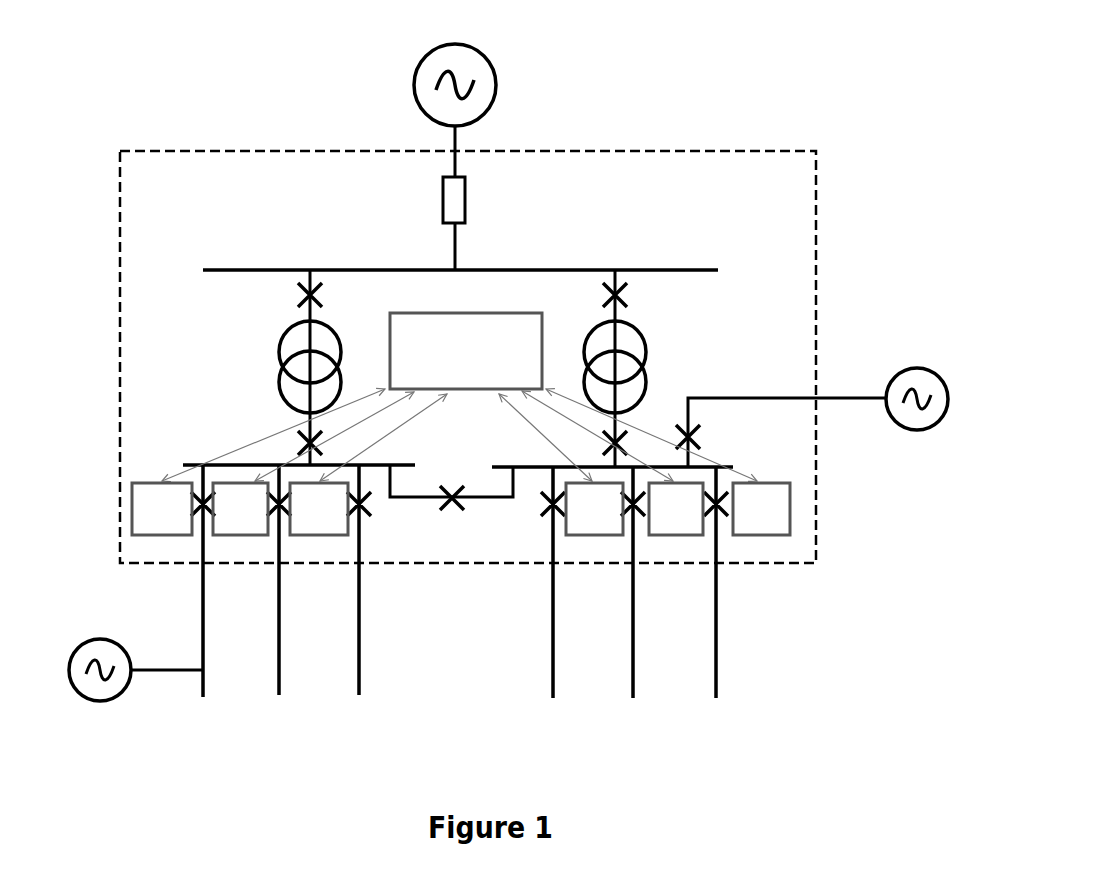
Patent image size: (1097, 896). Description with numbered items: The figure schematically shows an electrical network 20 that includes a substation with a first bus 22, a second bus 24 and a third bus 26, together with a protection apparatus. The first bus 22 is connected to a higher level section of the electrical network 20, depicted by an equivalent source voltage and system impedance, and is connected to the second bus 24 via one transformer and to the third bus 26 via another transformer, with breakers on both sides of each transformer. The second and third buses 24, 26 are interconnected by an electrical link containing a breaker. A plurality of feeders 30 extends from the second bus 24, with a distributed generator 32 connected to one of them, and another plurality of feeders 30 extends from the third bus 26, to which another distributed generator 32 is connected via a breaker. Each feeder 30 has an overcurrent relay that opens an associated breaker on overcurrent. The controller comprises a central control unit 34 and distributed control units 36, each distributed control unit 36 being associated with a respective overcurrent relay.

The electrical network 20 is at (841, 105).
The first bus 22 is at (199, 265).
The second bus 24 is at (182, 457).
The third bus 26 is at (732, 461).
The feeders 30 is at (211, 651).
The distributed generator 32 is at (95, 684).
The central control unit 34 is at (459, 397).
The distributed control unit 36 is at (461, 509).